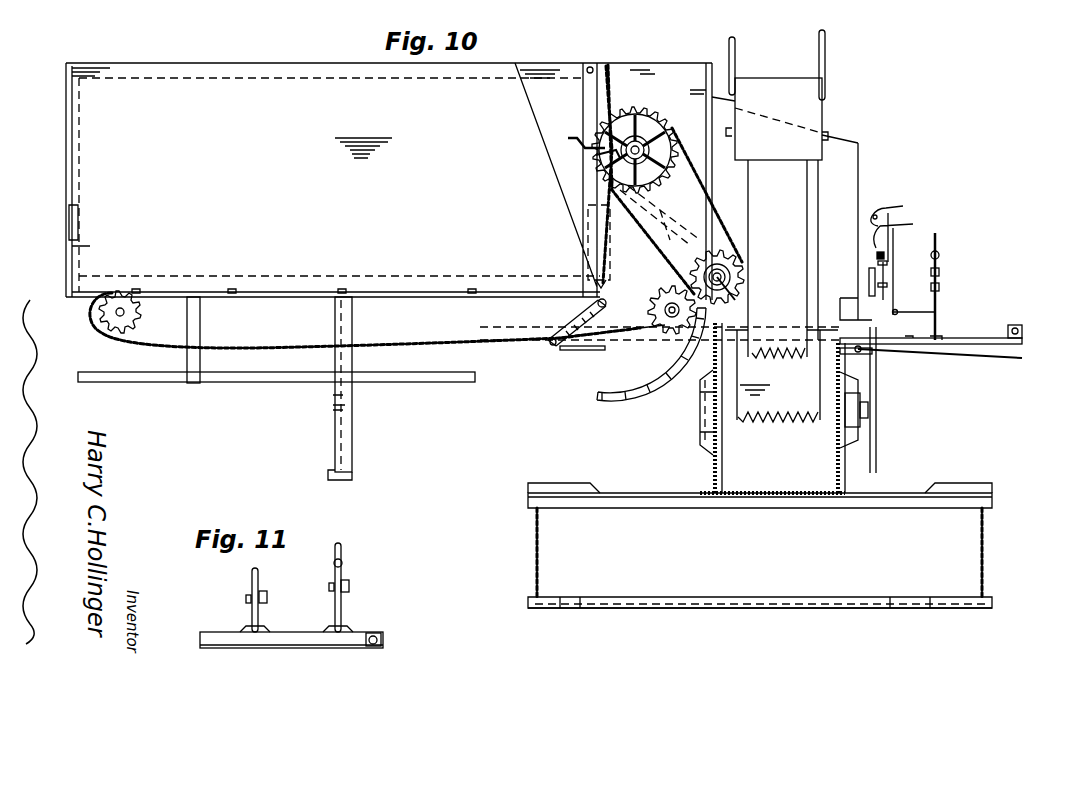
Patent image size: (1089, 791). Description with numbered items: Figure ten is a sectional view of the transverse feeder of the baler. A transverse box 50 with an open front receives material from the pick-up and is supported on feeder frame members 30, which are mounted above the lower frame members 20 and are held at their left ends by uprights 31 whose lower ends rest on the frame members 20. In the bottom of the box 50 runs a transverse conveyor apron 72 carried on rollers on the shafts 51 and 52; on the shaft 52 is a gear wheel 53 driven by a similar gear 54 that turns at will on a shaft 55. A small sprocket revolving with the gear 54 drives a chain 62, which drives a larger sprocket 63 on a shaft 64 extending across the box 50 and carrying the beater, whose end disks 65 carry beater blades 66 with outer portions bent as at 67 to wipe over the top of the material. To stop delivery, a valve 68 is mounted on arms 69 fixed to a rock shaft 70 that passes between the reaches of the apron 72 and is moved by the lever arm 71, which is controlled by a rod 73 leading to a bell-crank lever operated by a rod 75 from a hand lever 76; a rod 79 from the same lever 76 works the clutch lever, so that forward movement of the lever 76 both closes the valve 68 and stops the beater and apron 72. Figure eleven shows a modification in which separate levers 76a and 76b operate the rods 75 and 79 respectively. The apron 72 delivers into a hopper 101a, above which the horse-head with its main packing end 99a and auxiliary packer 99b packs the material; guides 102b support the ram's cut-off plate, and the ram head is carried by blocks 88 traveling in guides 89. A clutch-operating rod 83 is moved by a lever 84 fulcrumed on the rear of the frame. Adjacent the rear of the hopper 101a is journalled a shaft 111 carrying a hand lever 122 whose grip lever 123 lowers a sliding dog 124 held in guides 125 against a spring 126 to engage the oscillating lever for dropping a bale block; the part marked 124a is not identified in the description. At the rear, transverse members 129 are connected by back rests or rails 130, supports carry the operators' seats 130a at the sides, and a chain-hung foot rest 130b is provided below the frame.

In FIG. 10, the transverse box 50 is at (155, 107).
In FIG. 10, the shaft 51 is at (112, 310).
In FIG. 10, the feeder frame members 30 is at (459, 384).
In FIG. 10, the transverse conveyor apron 72 is at (452, 297).
In FIG. 10, the sprocket 63 is at (634, 117).
In FIG. 10, the shaft 64 is at (638, 146).
In FIG. 10, the disks 65 is at (600, 137).
In FIG. 10, the bent outer portions of beater blades 67 is at (570, 138).
In FIG. 10, the beater blades 66 is at (605, 159).
In FIG. 10, the chain 62 is at (690, 168).
In FIG. 10, the valve 68 is at (659, 203).
In FIG. 10, the arms 69 is at (578, 250).
In FIG. 10, the gear 54 is at (738, 270).
In FIG. 10, the shaft 55 is at (746, 294).
In FIG. 10, the gear wheel 53 is at (652, 318).
In FIG. 10, the shaft 52 is at (670, 318).
In FIG. 10, the rock shaft 70 is at (580, 308).
In FIG. 10, the lever arm 71 is at (552, 344).
In FIG. 10, the rod 73 is at (600, 352).
In FIG. 10, the auxiliary packer 99b is at (800, 250).
In FIG. 10, the guides 102b is at (760, 356).
In FIG. 10, the main packing end 99a is at (798, 410).
In FIG. 10, the hopper 101a is at (842, 174).
In FIG. 10, the uprights 31 is at (716, 450).
In FIG. 10, the guides 89 is at (700, 420).
In FIG. 10, the blocks 88 is at (865, 402).
In FIG. 10, the operating rod 83 is at (862, 354).
In FIG. 10, the frame members 20 is at (846, 472).
In FIG. 10, the operators' seats 130a is at (533, 484).
In FIG. 10, the foot rest 130b is at (556, 606).
In FIG. 10, the transversely extending members 129 is at (951, 346).
In FIG. 11, the transversely extending members 129 is at (232, 648).
In FIG. 10, the back rests or rails 130 is at (1015, 326).
In FIG. 11, the back rests or rails 130 is at (372, 634).
In FIG. 10, the lever 84 is at (994, 358).
In FIG. 10, the shaft 111 is at (905, 312).
In FIG. 10, the hand lever 76 is at (938, 238).
In FIG. 10, the rod 75 is at (940, 273).
In FIG. 11, the rod 75 is at (350, 590).
In FIG. 10, the rod 79 is at (940, 287).
In FIG. 11, the rod 79 is at (267, 601).
In FIG. 10, the hand lever 122 is at (893, 216).
In FIG. 10, the grip lever 123 is at (906, 228).
In FIG. 10, the spring 126 is at (875, 256).
In FIG. 10, the guides 125 is at (884, 262).
In FIG. 10, the sliding dog 124 is at (884, 272).
In FIG. 10, the slot 124a is at (868, 272).
In FIG. 11, the lever 76a is at (252, 582).
In FIG. 11, the lever 76b is at (342, 548).